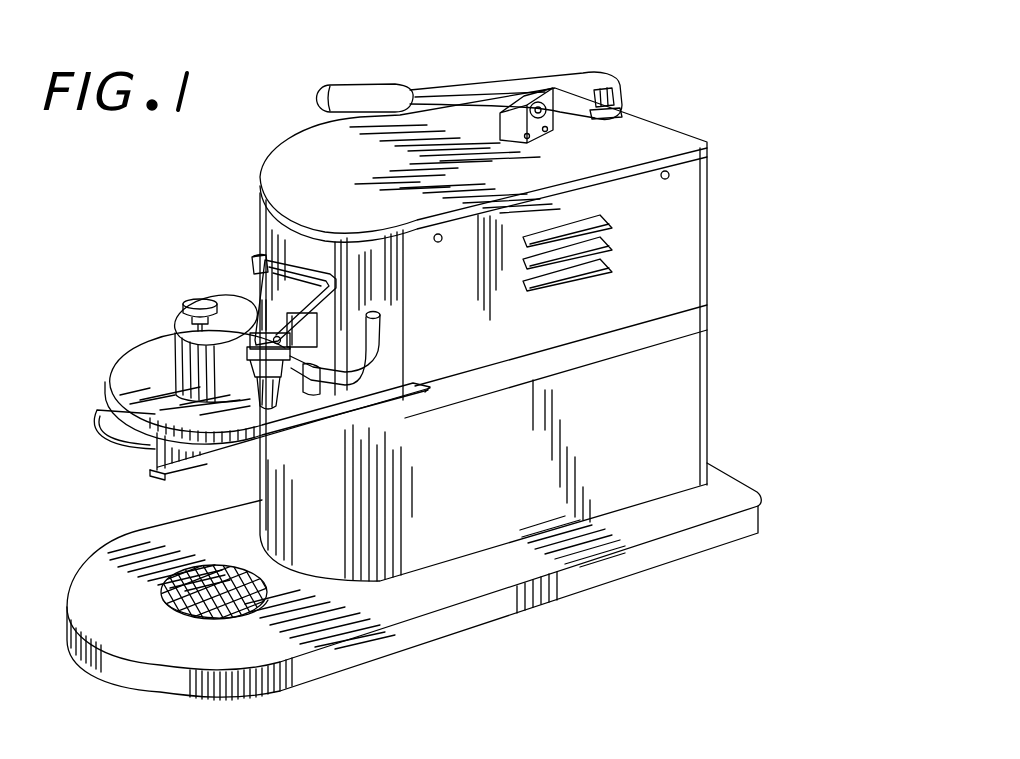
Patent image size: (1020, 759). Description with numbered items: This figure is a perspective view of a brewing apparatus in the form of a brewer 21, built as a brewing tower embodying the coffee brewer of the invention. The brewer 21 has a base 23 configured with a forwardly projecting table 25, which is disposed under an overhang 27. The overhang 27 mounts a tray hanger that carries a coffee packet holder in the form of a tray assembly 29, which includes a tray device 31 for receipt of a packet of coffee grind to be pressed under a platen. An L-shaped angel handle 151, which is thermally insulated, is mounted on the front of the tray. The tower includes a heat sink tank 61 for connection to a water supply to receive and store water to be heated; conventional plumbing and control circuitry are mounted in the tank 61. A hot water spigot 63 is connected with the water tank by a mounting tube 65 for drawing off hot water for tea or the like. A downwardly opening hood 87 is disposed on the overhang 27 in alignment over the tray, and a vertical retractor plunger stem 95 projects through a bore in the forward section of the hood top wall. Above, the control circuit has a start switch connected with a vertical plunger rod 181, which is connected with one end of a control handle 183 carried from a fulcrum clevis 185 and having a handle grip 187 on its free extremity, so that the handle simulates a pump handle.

The brewer 21 is at (718, 378).
The base 23 is at (712, 558).
The table 25 is at (84, 587).
The overhang 27 is at (117, 356).
The tray assembly 29 is at (132, 461).
The tray device 31 is at (168, 482).
The heat sink tank 61 is at (708, 225).
The hot water spigot 63 is at (260, 378).
The mounting tube 65 is at (385, 330).
The hood 87 is at (233, 286).
The retractor plunger stem 95 is at (183, 290).
The angel handle 151 is at (97, 410).
The plunger rod 181 is at (627, 72).
The control handle 183 is at (448, 97).
The fulcrum clevis 185 is at (522, 88).
The handle grip 187 is at (349, 90).